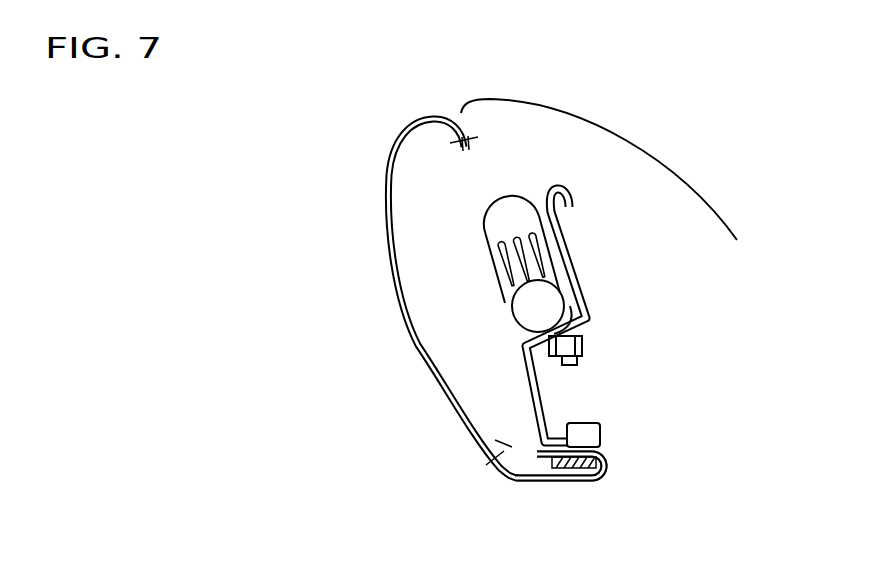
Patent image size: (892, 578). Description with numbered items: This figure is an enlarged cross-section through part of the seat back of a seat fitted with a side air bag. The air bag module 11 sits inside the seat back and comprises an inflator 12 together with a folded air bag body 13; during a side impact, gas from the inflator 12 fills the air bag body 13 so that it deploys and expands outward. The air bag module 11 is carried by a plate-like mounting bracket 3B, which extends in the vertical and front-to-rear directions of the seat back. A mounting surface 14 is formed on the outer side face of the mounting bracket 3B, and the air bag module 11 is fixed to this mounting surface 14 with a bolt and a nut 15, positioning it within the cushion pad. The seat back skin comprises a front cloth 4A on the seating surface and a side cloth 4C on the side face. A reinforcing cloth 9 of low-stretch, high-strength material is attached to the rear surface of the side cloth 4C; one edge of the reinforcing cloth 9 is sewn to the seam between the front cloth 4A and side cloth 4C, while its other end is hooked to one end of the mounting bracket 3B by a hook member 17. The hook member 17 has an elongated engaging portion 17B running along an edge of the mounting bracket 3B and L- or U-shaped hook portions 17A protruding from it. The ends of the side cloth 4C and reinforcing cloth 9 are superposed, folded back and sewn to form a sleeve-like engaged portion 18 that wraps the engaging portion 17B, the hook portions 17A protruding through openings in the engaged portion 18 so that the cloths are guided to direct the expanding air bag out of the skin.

The front cloth 4A is at (670, 187).
The side cloth 4C is at (466, 298).
The reinforcing cloth 9 is at (368, 373).
The air bag module 11 is at (470, 193).
The inflator 12 is at (569, 266).
The air bag body 13 is at (511, 232).
The mounting surface 14 is at (565, 312).
The bolt and nut 15 is at (583, 342).
The mounting bracket 3B is at (609, 318).
The hook member 17 is at (613, 461).
The hook portion 17A is at (600, 424).
The engaging portion 17B is at (572, 466).
The engaged portion 18 is at (513, 482).